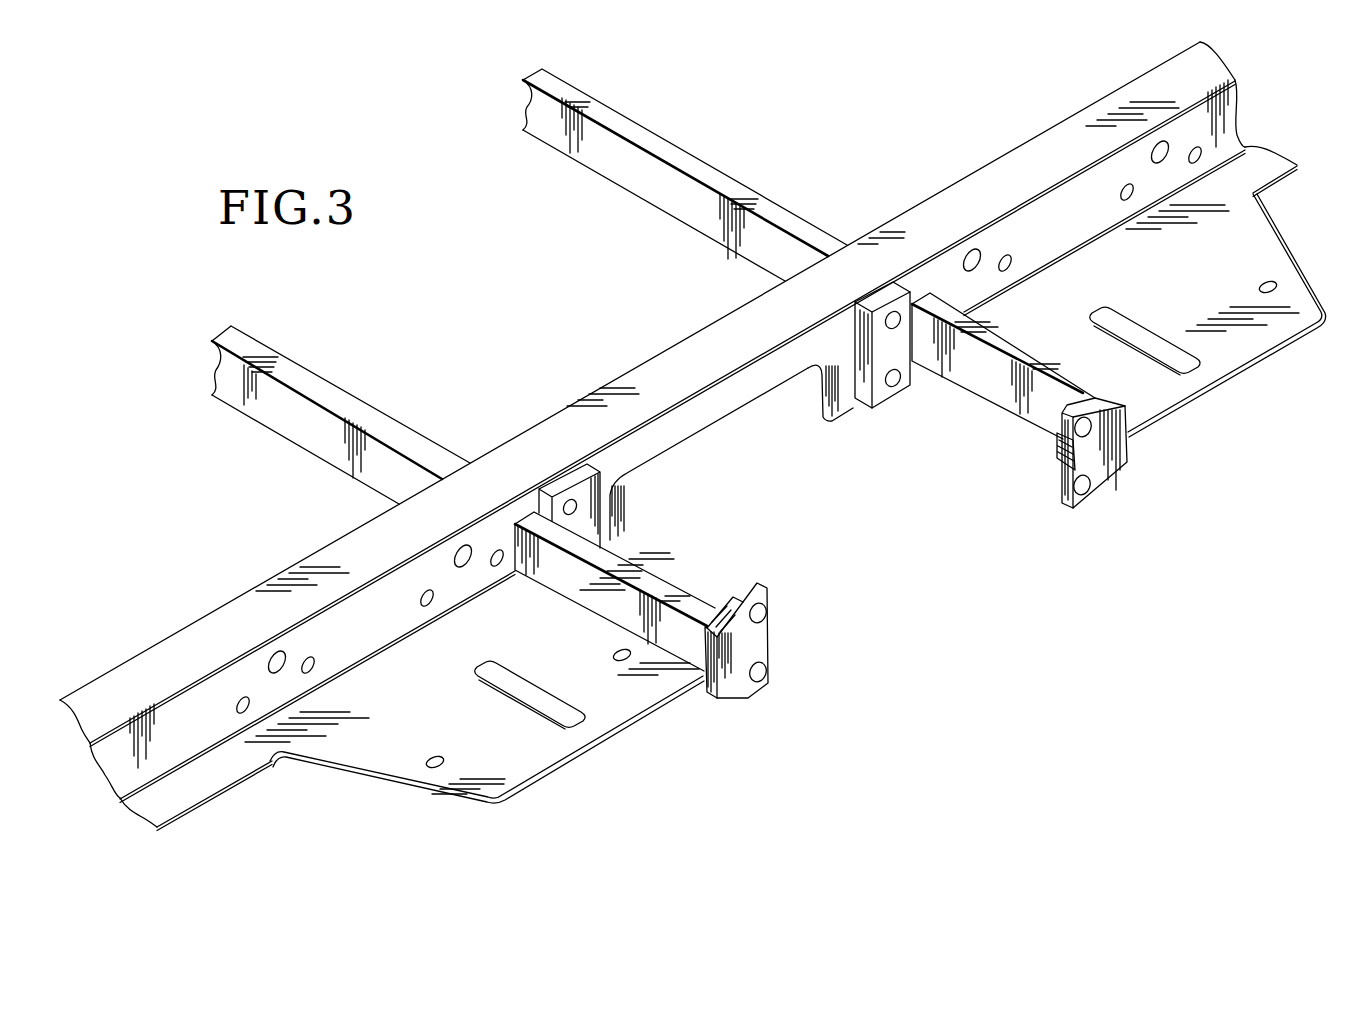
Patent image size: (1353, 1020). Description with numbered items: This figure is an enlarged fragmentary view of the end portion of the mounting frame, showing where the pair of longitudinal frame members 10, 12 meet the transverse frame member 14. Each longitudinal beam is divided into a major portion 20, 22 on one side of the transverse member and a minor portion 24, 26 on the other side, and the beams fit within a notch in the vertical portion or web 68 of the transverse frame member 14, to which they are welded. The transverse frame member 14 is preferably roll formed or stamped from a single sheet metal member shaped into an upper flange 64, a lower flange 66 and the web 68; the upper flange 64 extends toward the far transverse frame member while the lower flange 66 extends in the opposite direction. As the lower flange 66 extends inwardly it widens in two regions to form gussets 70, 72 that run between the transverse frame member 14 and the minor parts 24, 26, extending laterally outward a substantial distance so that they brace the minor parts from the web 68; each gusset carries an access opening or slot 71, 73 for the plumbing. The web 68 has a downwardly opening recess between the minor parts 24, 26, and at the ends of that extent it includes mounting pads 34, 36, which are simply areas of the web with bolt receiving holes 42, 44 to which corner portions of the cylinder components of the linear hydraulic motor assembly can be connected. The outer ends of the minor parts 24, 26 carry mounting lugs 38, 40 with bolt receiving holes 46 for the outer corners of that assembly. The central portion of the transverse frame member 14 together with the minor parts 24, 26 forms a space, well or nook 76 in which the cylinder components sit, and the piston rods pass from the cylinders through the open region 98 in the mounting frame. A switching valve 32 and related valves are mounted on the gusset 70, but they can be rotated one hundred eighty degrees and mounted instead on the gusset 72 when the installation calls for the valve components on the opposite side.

The longitudinal frame member 10 is at (490, 543).
The longitudinal frame member 12 is at (861, 291).
The transverse frame member 14 is at (693, 446).
The major portion 20 is at (385, 414).
The major portion 22 is at (670, 150).
The minor portion 24 is at (668, 592).
The minor portion 26 is at (1005, 378).
The switching valve 32 is at (735, 426).
The mounting pad 34 is at (609, 483).
The mounting pad 36 is at (875, 372).
The mounting lug 38 is at (734, 682).
The mounting lug 40 is at (1094, 458).
The bolt receiving hole 42 is at (571, 500).
The bolt receiving hole 44 is at (870, 302).
The bolt receiving hole 46 is at (1078, 487).
The upper flange 64 is at (998, 178).
The lower flange 66 is at (203, 785).
The web 68 is at (215, 690).
The gusset 70 is at (487, 740).
The access slot 71 is at (511, 687).
The gusset 72 is at (1208, 318).
The access slot 73 is at (1135, 326).
The nook 76 is at (888, 531).
The open region 98 is at (670, 258).